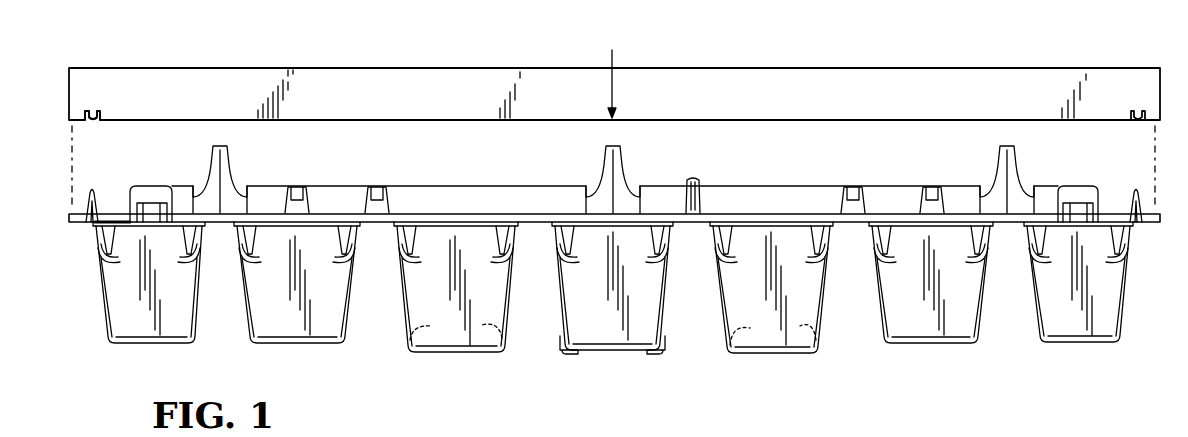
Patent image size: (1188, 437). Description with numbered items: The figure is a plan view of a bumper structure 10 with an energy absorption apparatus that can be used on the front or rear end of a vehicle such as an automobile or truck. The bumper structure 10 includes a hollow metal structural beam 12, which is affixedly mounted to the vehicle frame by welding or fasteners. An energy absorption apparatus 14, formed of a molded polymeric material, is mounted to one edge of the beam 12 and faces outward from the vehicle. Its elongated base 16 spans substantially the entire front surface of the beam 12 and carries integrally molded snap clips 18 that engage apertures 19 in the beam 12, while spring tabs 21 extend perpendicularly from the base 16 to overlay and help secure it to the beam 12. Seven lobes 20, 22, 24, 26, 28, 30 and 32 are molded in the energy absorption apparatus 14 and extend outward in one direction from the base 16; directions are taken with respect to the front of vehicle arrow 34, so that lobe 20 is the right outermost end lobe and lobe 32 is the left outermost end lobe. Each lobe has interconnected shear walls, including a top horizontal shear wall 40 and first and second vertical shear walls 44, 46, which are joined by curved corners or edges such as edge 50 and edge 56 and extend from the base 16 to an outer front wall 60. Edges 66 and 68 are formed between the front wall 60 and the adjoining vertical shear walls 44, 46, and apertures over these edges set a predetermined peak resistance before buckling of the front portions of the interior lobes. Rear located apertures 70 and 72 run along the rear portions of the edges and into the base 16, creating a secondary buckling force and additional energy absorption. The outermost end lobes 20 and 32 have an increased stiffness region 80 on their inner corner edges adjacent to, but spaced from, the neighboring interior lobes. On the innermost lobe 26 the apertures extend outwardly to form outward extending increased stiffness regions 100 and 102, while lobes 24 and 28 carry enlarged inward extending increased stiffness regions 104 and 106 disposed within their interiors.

The bumper structure 10 is at (243, 46).
The structural beam 12 is at (345, 76).
The energy absorption apparatus 14 is at (264, 346).
The base 16 is at (86, 240).
The snap clip 18 is at (94, 190).
The aperture 19 is at (100, 114).
The lobe 20 is at (140, 346).
The spring tab 21 is at (145, 205).
The lobe 22 is at (330, 346).
The lobe 24 is at (485, 362).
The lobe 26 is at (640, 352).
The lobe 28 is at (788, 358).
The lobe 30 is at (935, 346).
The lobe 32 is at (1095, 345).
The arrow 34 is at (640, 46).
The top horizontal shear wall 40 is at (745, 268).
The first vertical shear wall 44 is at (830, 292).
The second vertical shear wall 46 is at (722, 320).
The corner or edge 50 is at (1125, 232).
The corner or edge 56 is at (1030, 293).
The front wall 60 is at (800, 355).
The edge 66 is at (828, 322).
The edge 68 is at (717, 352).
The rear located aperture 70 is at (833, 230).
The rear located aperture 72 is at (717, 233).
The increased stiffness region 80 is at (188, 235).
The outward extending increased stiffness region 100 is at (667, 355).
The outward extending increased stiffness region 102 is at (558, 356).
The inward extending increased stiffness region 104 is at (500, 343).
The inward extending increased stiffness region 106 is at (432, 340).